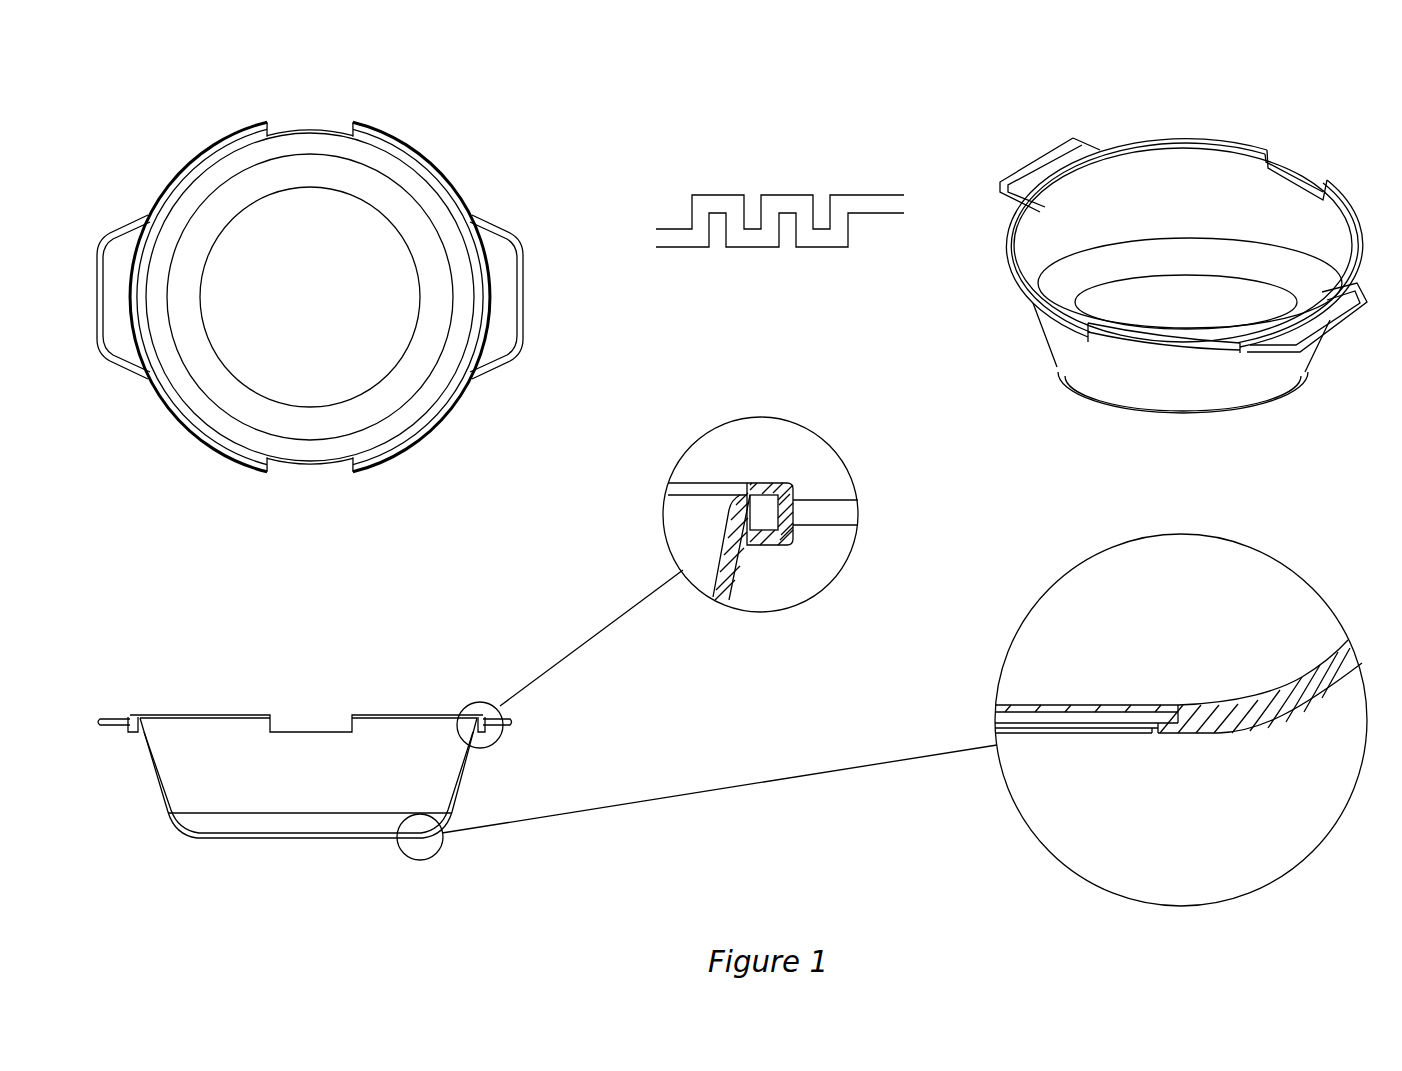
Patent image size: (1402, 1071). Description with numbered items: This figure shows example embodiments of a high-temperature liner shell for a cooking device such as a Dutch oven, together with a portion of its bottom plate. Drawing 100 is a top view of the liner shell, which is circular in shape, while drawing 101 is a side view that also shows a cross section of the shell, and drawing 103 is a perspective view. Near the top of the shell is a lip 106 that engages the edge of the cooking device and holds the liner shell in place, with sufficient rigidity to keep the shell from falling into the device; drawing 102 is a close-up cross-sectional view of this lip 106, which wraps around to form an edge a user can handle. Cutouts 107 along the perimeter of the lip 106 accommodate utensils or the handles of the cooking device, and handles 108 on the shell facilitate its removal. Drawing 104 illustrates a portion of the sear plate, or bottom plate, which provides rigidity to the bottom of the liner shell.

The top view drawing of the liner shell 100 is at (454, 411).
The side view drawing of the liner shell 101 is at (474, 757).
The close-up cross-sectional view of the lip 102 is at (697, 482).
The perspective view drawing of the liner shell 103 is at (1313, 367).
The sear plate portion drawing 104 is at (1295, 570).
The lip 106 is at (504, 703).
The cutouts 107 is at (326, 119).
The handles 108 is at (105, 242).